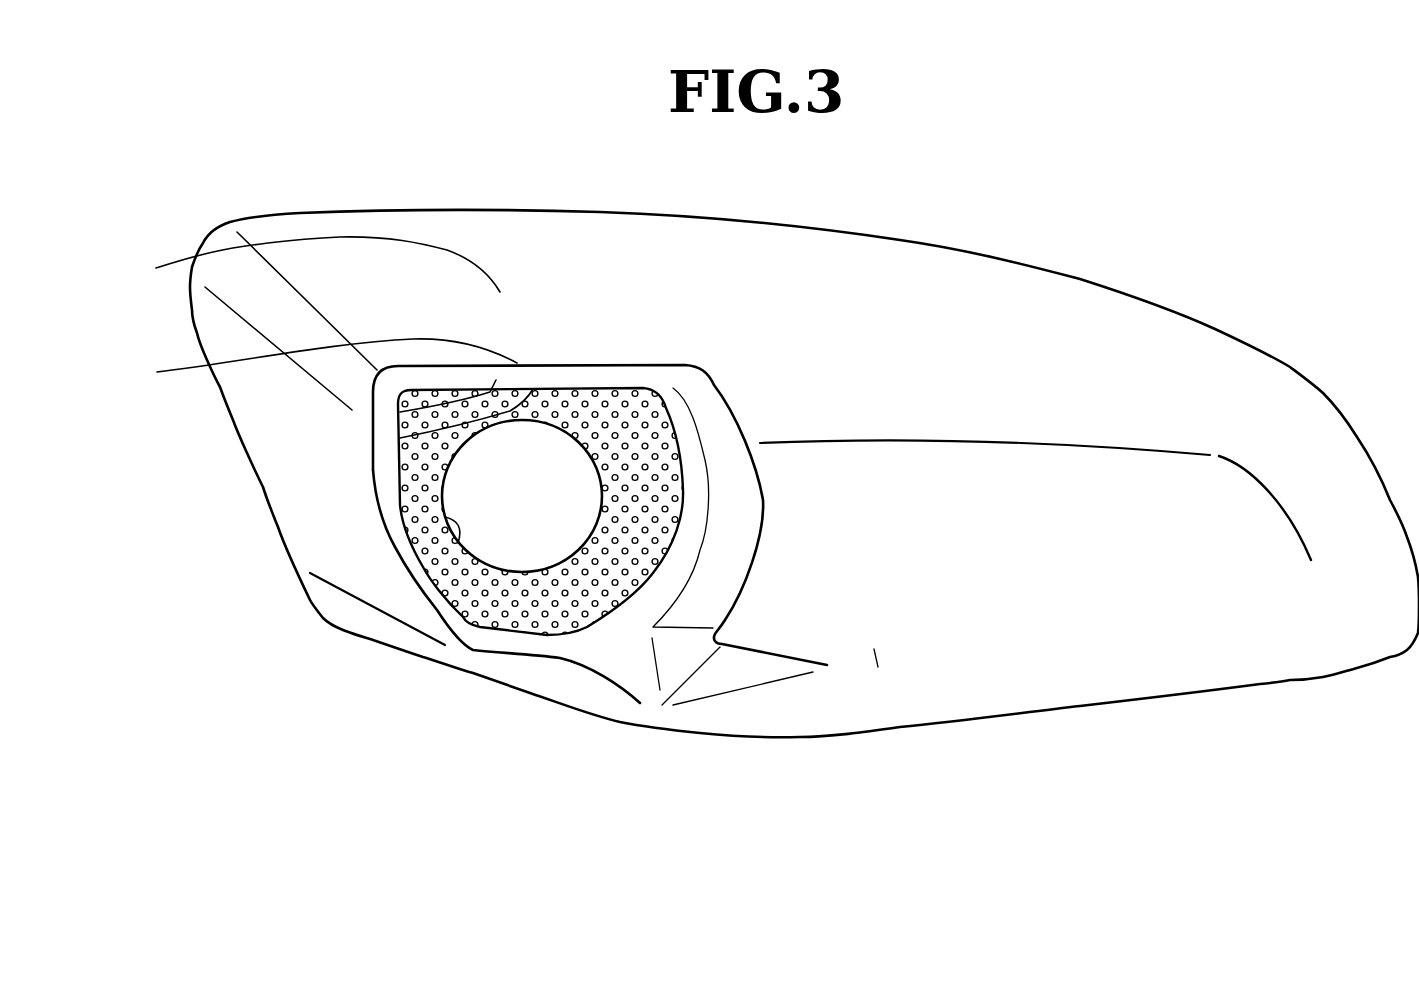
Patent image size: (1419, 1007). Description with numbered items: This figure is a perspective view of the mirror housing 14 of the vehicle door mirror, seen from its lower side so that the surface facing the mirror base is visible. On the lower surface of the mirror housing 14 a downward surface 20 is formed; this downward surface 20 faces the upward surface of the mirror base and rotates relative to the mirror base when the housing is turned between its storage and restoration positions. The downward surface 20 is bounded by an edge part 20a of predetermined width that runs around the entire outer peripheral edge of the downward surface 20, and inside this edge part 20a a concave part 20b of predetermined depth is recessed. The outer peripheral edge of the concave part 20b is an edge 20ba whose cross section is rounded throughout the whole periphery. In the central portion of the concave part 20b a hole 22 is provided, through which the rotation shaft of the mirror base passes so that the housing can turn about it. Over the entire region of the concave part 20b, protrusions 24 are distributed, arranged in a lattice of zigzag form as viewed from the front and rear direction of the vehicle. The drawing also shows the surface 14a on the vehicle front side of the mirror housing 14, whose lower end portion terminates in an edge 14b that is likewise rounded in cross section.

The mirror housing 14 is at (1116, 166).
The surface on the vehicle front side 14a is at (295, 264).
The edge 14b is at (304, 321).
The downward surface 20 is at (543, 594).
The edge part 20a is at (400, 411).
The concave part 20b is at (433, 453).
The edge of the outer peripheral edge part of the concave part 20ba is at (400, 438).
The hole 22 is at (458, 542).
The protrusions 24 is at (584, 605).